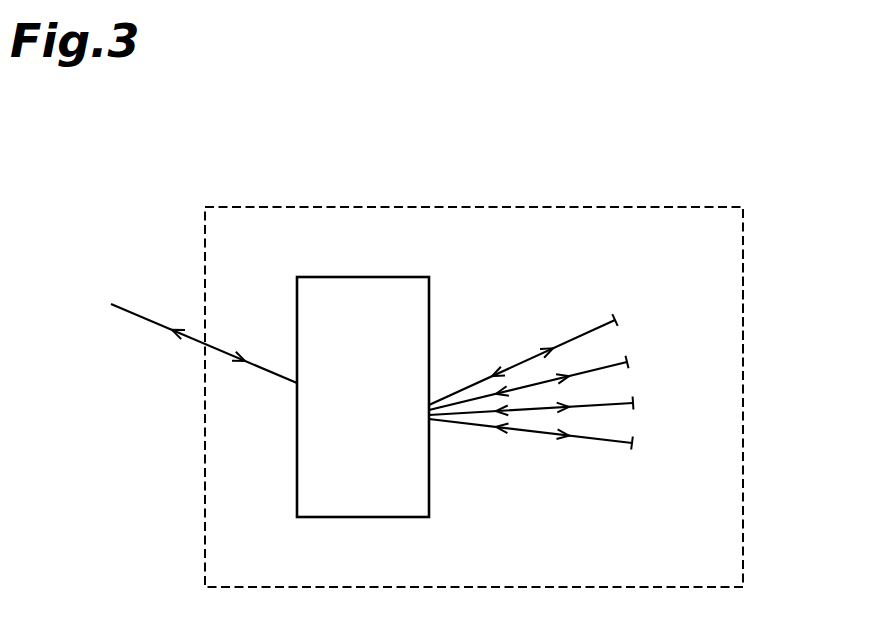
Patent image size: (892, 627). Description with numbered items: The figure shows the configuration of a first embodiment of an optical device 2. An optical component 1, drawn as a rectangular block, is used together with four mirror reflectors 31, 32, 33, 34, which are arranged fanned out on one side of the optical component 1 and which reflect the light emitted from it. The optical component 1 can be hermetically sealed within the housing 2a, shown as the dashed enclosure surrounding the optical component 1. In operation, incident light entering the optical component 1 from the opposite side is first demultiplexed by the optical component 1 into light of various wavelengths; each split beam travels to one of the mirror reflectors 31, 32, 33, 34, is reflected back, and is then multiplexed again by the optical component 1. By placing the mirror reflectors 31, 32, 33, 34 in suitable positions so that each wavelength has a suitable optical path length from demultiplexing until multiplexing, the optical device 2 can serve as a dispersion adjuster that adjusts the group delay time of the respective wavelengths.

The optical component 1 is at (371, 293).
The optical device 2 is at (477, 175).
The housing 2a is at (744, 305).
The mirror reflector 31 is at (619, 324).
The mirror reflector 32 is at (629, 363).
The mirror reflector 33 is at (635, 404).
The mirror reflector 34 is at (634, 446).